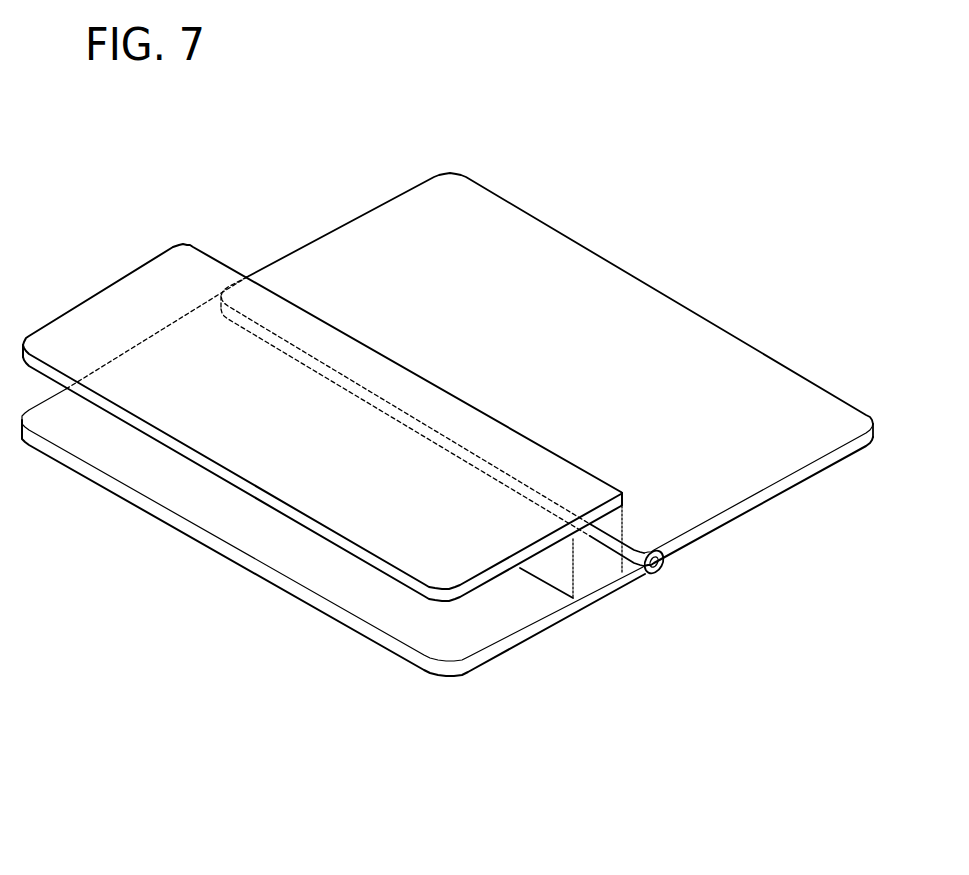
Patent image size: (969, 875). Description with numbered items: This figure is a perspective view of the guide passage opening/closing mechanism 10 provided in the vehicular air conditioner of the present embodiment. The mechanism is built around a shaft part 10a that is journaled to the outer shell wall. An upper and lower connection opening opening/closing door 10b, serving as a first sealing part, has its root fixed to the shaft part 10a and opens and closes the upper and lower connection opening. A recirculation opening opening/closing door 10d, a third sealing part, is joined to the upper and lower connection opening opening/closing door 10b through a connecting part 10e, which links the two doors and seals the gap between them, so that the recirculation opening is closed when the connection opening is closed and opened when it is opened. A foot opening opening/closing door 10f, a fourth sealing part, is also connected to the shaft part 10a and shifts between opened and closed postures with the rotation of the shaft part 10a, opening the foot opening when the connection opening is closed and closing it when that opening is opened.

The guide passage opening/closing mechanism 10 is at (630, 252).
The shaft part 10a is at (660, 573).
The upper and lower connection opening opening/closing door 10b is at (498, 654).
The recirculation opening opening/closing door 10d is at (112, 300).
The connecting part 10e is at (587, 575).
The foot opening opening/closing door 10f is at (790, 485).